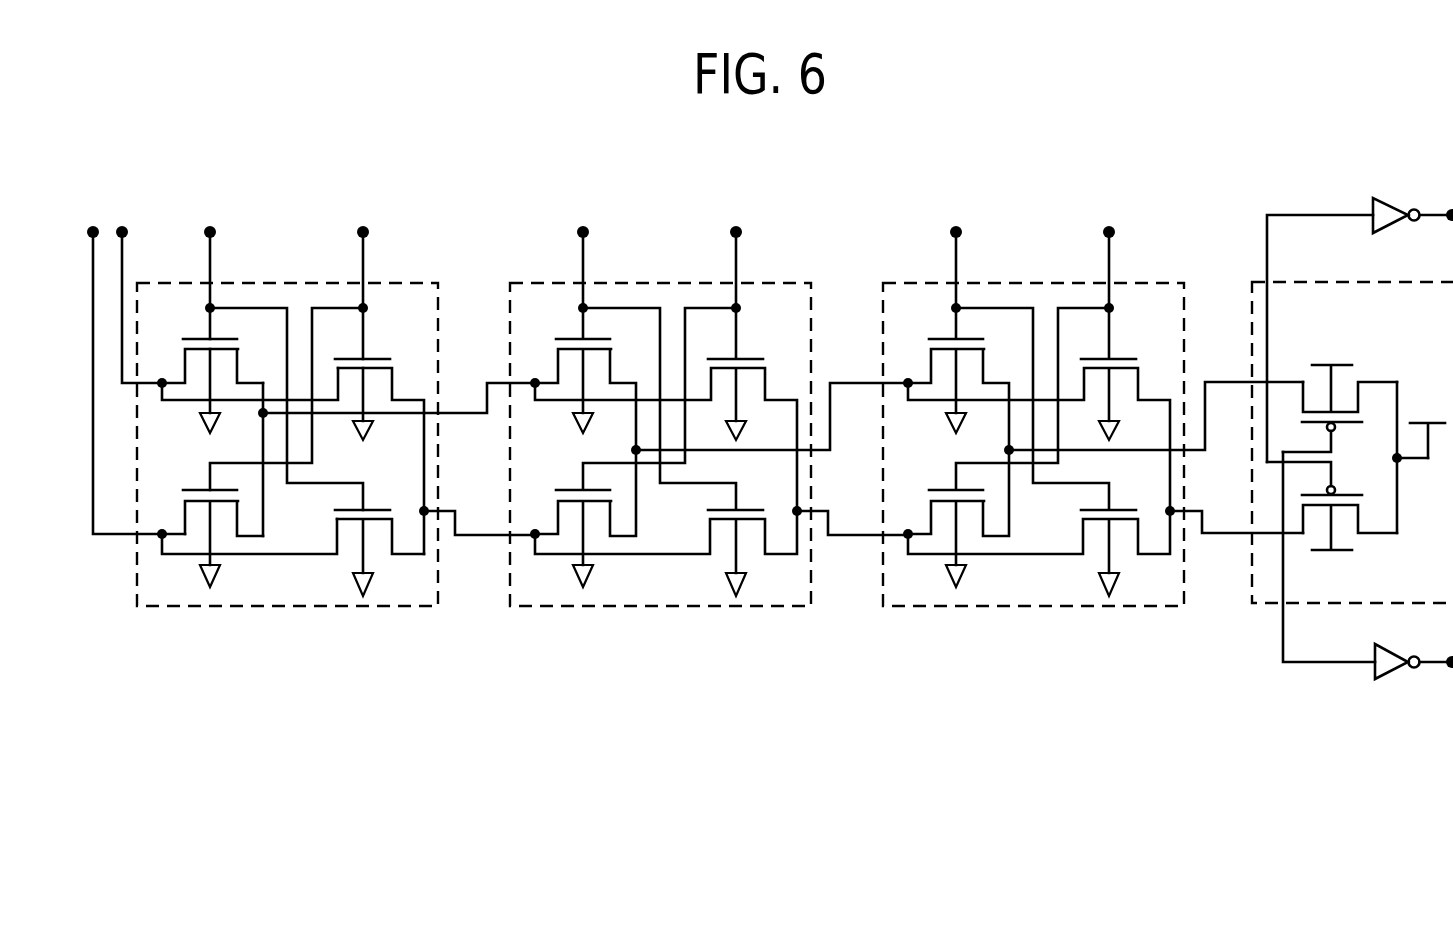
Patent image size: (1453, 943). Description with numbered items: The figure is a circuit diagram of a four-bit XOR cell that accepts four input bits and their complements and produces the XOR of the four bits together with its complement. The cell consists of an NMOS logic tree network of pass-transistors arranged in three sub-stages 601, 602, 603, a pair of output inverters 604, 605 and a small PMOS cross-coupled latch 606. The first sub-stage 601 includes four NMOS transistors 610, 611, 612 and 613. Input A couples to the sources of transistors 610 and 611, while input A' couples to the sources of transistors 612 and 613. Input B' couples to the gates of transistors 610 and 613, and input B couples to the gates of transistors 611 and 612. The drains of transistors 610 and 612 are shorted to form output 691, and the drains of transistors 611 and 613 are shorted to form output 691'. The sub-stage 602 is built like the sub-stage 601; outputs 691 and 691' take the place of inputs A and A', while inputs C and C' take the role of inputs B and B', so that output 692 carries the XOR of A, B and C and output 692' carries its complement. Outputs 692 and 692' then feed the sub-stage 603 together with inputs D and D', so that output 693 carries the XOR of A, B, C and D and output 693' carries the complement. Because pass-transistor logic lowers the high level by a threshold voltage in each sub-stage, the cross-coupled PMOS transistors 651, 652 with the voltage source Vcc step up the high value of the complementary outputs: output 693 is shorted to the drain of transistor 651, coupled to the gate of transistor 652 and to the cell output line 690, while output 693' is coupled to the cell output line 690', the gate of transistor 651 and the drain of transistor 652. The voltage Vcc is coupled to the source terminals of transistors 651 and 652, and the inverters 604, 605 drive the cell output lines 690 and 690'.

The sub-stage 601 is at (287, 411).
The sub-stage 602 is at (785, 283).
The sub-stage 603 is at (1158, 283).
The output inverter 604 is at (1388, 197).
The output inverter 605 is at (1392, 680).
The PMOS cross-coupled latch 606 is at (1352, 412).
The NMOS transistor 610 is at (183, 347).
The NMOS transistor 611 is at (392, 364).
The NMOS transistor 612 is at (183, 500).
The NMOS transistor 613 is at (393, 518).
The PMOS transistor 651 is at (1360, 412).
The PMOS transistor 652 is at (1360, 505).
The cell output line 690 is at (1320, 308).
The cell output line 690' is at (1329, 590).
The output 691 is at (396, 380).
The output 691' is at (477, 500).
The output 692 is at (769, 386).
The output 692' is at (850, 500).
The output 693 is at (1153, 386).
The output 693' is at (1234, 499).
The input A is at (137, 288).
The input A' is at (135, 364).
The input B is at (363, 251).
The input B' is at (210, 251).
The input C is at (736, 251).
The input C' is at (583, 251).
The input D is at (1110, 251).
The input D' is at (957, 251).
The voltage source Vcc is at (1427, 423).